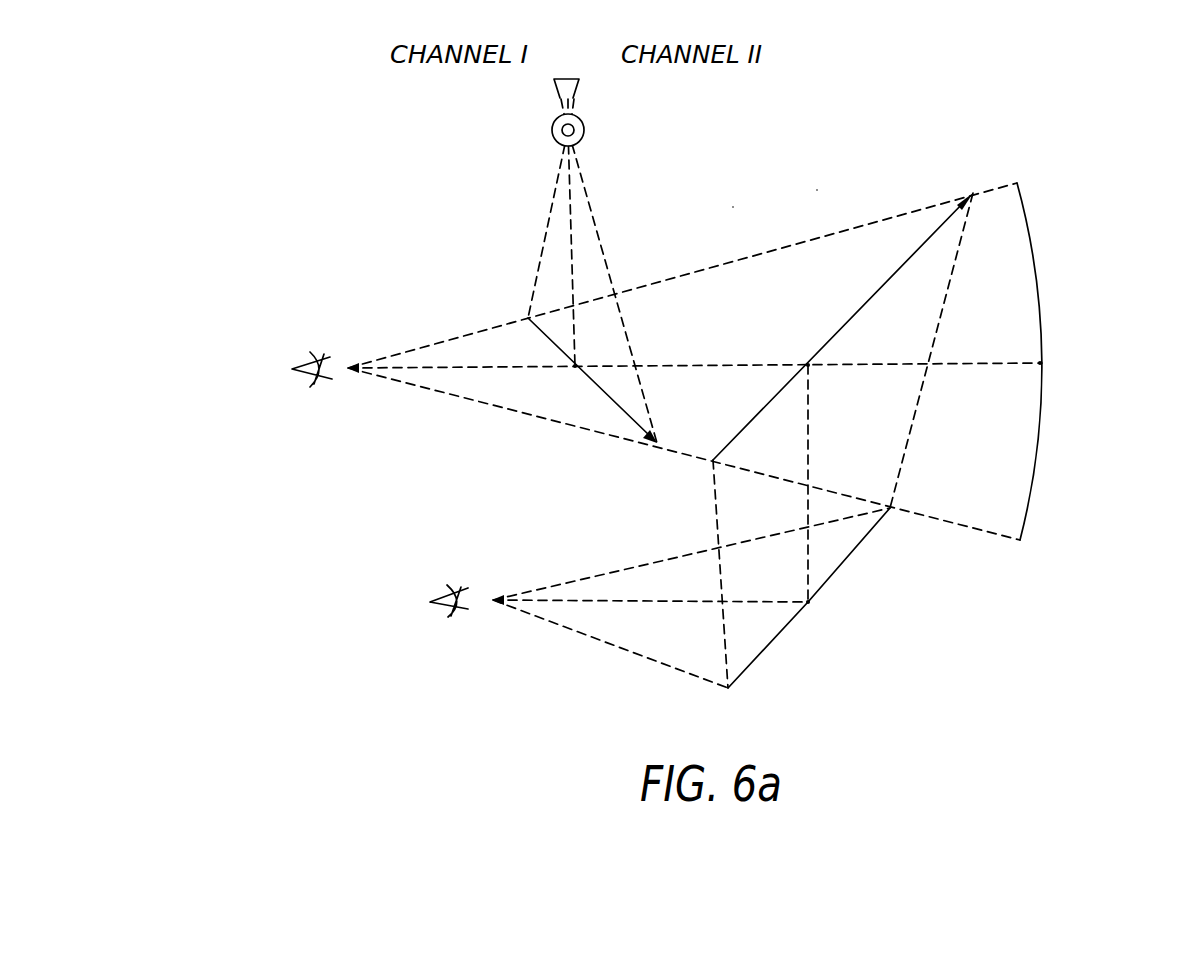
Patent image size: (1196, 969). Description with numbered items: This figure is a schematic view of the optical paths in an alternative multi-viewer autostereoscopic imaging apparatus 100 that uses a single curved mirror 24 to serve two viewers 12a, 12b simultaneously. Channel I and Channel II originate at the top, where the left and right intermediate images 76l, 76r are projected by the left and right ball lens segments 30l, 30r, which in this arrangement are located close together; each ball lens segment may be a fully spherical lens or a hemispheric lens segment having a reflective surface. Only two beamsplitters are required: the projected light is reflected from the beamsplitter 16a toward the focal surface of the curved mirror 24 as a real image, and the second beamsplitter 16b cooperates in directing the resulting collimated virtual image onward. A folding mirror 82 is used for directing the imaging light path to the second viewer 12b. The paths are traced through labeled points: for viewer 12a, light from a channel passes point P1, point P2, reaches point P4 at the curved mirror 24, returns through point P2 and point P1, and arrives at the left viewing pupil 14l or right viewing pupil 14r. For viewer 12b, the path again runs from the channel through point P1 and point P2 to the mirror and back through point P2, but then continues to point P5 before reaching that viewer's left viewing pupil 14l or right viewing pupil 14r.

The viewer 12a is at (347, 330).
The viewer 12b is at (476, 632).
The left viewing pupil 14l is at (251, 347).
The right viewing pupil 14r is at (298, 367).
The beamsplitter 16a is at (552, 340).
The second beamsplitter 16b is at (875, 297).
The curved mirror 24 is at (1038, 290).
The left ball lens segment 30l is at (522, 271).
The right ball lens segment 30r is at (553, 137).
The left intermediate image 76l is at (478, 98).
The right intermediate image 76r is at (560, 90).
The folding mirror 82 is at (865, 540).
The multi-viewer autostereoscopic imaging apparatus 100 is at (978, 616).
The point P1 is at (572, 368).
The point P2 is at (810, 367).
The point P4 is at (1040, 363).
The point P5 is at (810, 603).